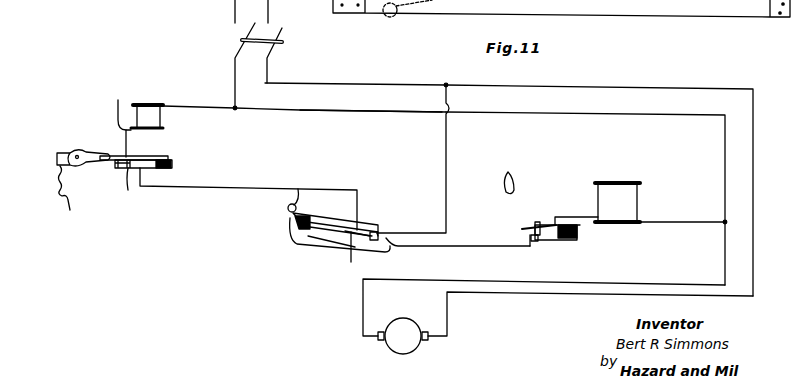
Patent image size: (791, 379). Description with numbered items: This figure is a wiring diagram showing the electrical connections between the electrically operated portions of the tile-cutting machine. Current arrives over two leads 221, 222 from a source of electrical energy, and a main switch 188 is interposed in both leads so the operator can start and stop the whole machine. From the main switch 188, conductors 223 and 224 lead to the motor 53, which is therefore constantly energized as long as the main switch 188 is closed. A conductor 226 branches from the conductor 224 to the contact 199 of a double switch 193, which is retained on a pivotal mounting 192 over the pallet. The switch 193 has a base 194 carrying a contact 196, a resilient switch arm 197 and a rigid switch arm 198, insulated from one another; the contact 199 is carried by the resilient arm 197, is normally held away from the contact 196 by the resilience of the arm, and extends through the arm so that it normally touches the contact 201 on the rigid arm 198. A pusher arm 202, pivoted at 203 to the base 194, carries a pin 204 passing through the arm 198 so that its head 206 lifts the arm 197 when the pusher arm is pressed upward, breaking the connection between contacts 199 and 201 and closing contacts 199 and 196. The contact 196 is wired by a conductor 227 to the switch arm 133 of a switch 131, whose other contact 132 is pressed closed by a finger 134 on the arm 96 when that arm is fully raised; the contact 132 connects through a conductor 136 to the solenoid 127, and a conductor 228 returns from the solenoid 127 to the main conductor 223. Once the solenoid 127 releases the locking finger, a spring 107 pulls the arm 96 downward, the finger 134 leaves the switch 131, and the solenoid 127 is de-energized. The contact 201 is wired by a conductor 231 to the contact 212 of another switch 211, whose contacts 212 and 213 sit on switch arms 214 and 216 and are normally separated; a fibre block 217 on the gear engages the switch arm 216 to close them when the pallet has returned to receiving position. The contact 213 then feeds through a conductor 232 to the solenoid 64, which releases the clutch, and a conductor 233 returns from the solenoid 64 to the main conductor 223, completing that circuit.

The motor 53 is at (410, 348).
The solenoid 64 is at (633, 200).
The arm 96 is at (60, 152).
The spring 107 is at (74, 194).
The solenoid 127 is at (152, 103).
The switch 131 is at (184, 165).
The contact 132 is at (140, 155).
The contact 133 is at (125, 194).
The finger 134 is at (93, 151).
The conductor 136 is at (115, 111).
The main switch 188 is at (282, 47).
The pivotal mounting 192 is at (298, 191).
The double switch 193 is at (336, 262).
The base 194 is at (340, 215).
The contact 196 is at (378, 229).
The resilient switch arm 197 is at (312, 218).
The rigid switch arm 198 is at (322, 234).
The contact 199 is at (384, 237).
The contact 201 is at (398, 246).
The pusher arm 202 is at (350, 265).
The pivot 203 is at (291, 222).
The pin 204 is at (333, 243).
The head 206 is at (360, 222).
The switch 211 is at (568, 199).
The contact 212 is at (540, 240).
The contact 213 is at (537, 226).
The switch arm 214 is at (532, 243).
The switch arm 216 is at (522, 226).
The fibre block 217 is at (503, 170).
The lead 221 is at (227, 54).
The lead 222 is at (290, 41).
The conductor 223 is at (383, 112).
The conductor 224 is at (395, 82).
The conductor 226 is at (446, 172).
The conductor 227 is at (207, 189).
The conductor 228 is at (203, 108).
The conductor 231 is at (458, 251).
The conductor 232 is at (585, 219).
The conductor 233 is at (698, 206).